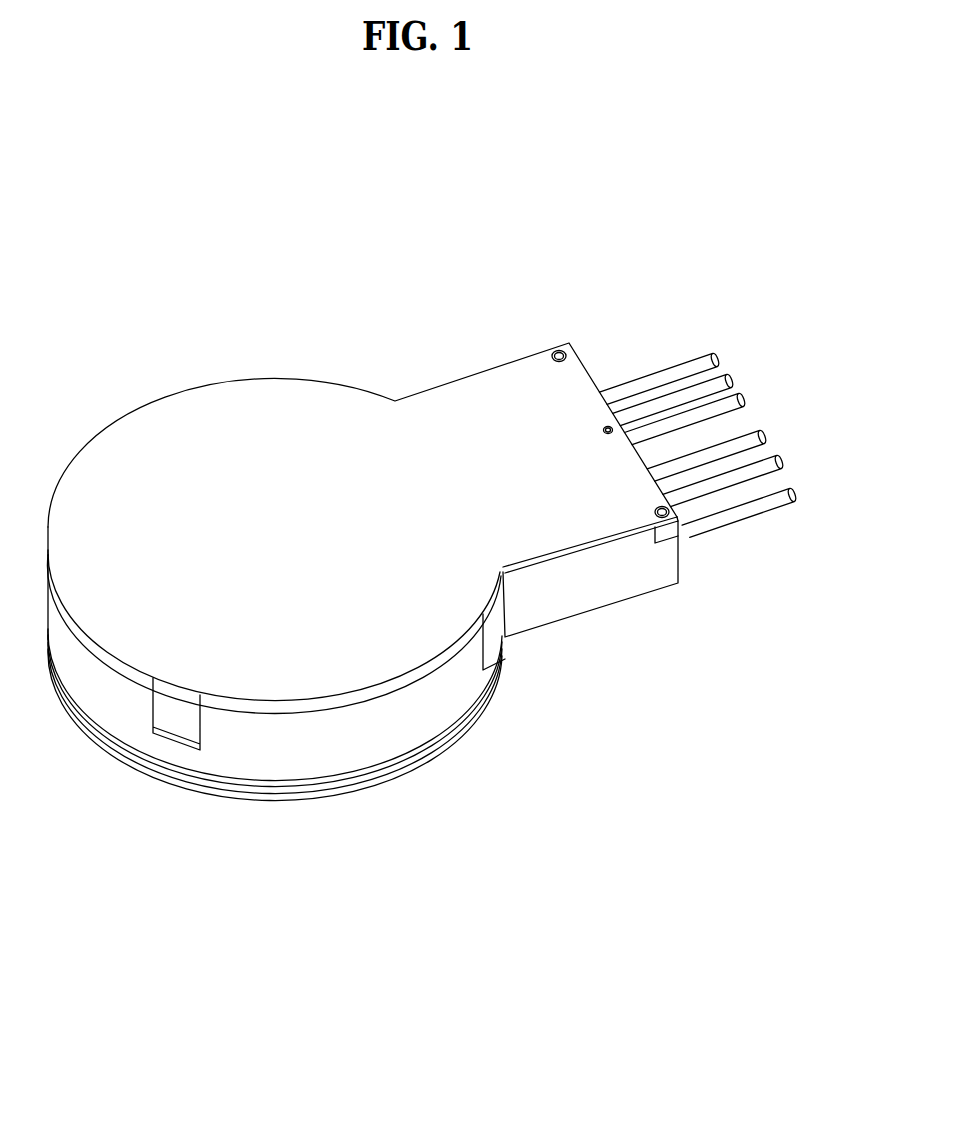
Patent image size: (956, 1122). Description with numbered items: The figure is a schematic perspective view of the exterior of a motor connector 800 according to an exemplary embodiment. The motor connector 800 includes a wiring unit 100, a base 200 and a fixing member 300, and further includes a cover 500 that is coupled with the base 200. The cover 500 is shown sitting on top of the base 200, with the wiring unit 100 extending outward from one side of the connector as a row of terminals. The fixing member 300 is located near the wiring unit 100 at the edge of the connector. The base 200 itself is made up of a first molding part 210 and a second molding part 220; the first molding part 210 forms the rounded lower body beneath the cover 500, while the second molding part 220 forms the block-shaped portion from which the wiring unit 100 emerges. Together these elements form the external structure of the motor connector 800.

The motor connector 800 is at (508, 292).
The cover 500 is at (208, 413).
The wiring unit 100 is at (738, 377).
The fixing member 300 is at (668, 533).
The second molding part 220 is at (595, 590).
The first molding part 210 is at (393, 720).
The base 200 is at (183, 787).